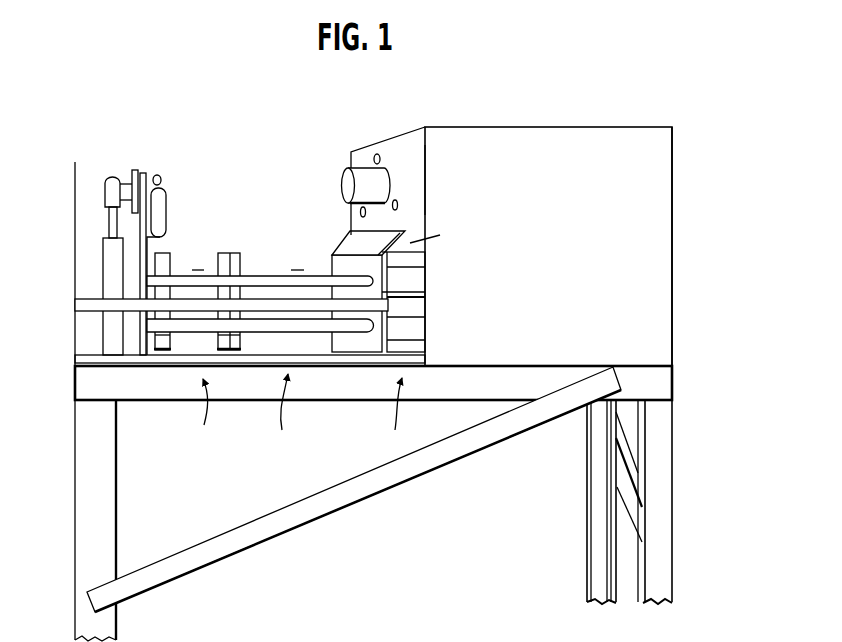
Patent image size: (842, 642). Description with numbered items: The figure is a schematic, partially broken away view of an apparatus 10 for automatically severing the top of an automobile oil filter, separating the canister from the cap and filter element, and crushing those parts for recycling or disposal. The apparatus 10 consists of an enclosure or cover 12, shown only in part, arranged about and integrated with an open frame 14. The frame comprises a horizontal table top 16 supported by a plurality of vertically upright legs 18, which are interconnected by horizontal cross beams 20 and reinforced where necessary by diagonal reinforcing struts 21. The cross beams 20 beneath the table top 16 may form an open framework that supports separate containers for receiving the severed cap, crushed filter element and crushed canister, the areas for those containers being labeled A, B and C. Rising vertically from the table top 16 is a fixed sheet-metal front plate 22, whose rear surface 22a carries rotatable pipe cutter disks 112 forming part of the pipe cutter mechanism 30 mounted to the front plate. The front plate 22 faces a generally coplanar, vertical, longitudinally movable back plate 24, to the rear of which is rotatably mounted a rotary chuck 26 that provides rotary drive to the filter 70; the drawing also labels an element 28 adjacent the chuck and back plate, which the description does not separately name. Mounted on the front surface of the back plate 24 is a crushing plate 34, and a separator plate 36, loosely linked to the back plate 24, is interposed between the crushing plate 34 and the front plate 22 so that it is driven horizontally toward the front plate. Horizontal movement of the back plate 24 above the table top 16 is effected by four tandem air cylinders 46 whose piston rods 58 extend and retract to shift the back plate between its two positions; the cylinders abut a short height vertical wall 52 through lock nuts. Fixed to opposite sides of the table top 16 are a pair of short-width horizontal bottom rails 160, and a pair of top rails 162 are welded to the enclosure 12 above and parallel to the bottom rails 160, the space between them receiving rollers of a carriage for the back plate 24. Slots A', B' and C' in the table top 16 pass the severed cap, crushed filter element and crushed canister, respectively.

The apparatus 10 is at (522, 94).
The enclosure or cover 12 is at (608, 124).
The open frame 14 is at (678, 437).
The horizontal table top 16 is at (108, 373).
The vertically upright legs 18 is at (105, 536).
The horizontal cross beams 20 is at (660, 380).
The diagonal reinforcing struts 21 is at (616, 470).
The fixed front plate 22 is at (402, 145).
The rear surface of fixed front plate 22a is at (408, 173).
The movable back plate 24 is at (143, 173).
The rotary chuck 26 is at (123, 178).
The cylinder 28 is at (100, 251).
The pipe cutter mechanism 30 is at (369, 156).
The crushing plate 34 is at (172, 262).
The separator plate 36 is at (240, 262).
The tandem air cylinders 46 is at (410, 328).
The short height vertical wall 52 is at (349, 265).
The air cylinder piston rods 58 is at (265, 326).
The filter 70 is at (346, 186).
The pipe cutter disks 112 is at (395, 199).
The horizontal bottom rails 160 is at (78, 360).
The top rails 162 is at (78, 305).